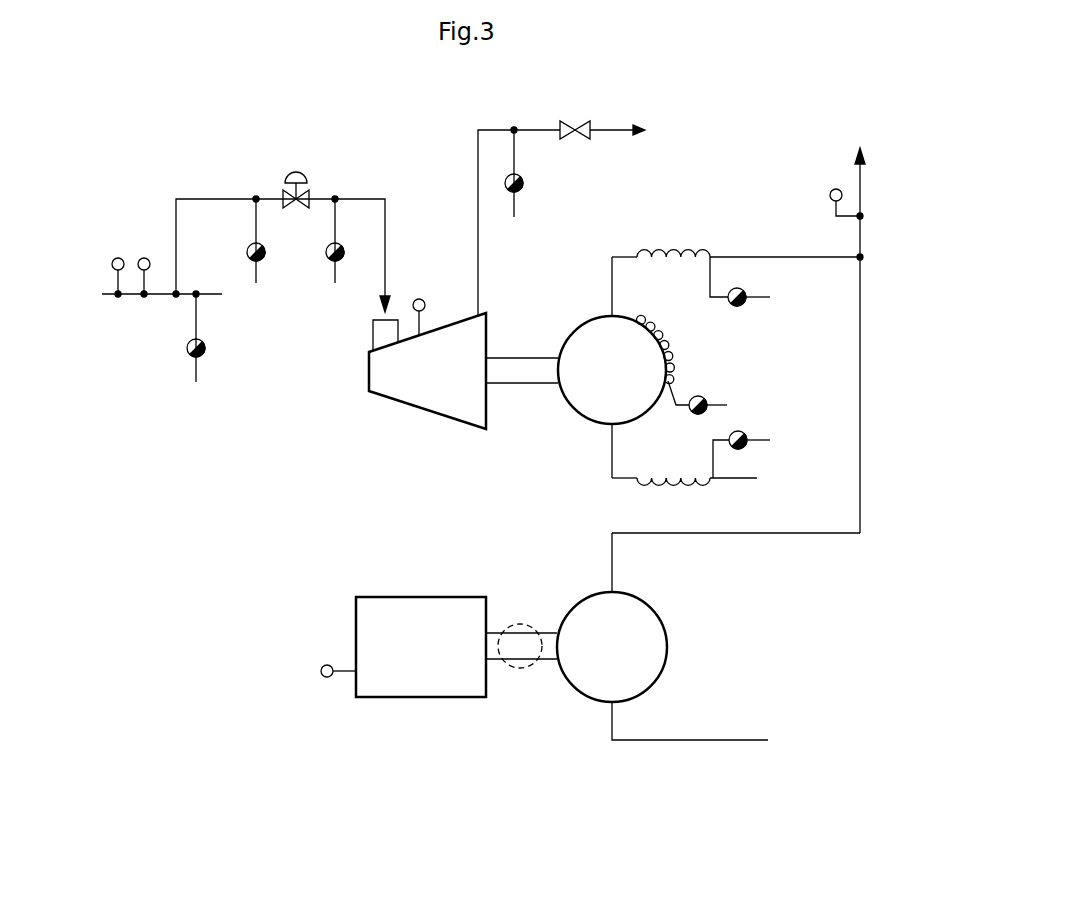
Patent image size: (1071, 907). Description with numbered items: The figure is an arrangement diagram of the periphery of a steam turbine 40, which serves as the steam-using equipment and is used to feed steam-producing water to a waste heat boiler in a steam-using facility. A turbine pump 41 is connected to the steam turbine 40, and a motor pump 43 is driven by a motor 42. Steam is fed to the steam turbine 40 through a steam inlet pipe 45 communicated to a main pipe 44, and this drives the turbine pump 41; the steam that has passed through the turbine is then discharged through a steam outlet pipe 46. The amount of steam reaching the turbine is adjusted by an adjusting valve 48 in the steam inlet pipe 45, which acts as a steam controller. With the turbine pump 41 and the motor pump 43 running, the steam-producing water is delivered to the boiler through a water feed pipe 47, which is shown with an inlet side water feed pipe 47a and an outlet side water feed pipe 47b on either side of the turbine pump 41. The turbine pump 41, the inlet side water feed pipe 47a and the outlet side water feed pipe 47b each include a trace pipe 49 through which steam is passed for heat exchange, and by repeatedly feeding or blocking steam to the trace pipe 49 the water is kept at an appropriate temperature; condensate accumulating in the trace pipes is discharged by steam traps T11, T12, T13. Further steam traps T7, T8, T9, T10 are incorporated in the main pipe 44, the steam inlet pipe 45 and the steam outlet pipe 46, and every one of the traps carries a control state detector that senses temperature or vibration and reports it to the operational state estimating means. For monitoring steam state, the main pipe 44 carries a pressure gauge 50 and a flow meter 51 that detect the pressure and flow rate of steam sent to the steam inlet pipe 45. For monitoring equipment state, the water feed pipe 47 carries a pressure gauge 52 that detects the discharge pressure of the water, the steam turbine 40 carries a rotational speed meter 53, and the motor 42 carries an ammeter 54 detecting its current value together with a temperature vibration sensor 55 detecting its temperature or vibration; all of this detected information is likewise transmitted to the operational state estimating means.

The steam turbine 40 is at (430, 400).
The turbine pump 41 is at (585, 420).
The motor 42 is at (418, 697).
The motor pump 43 is at (667, 640).
The main pipe 44 is at (165, 297).
The steam inlet pipe 45 is at (218, 199).
The steam outlet pipe 46 is at (538, 128).
The water feed pipe 47 is at (862, 298).
The inlet side water feed pipe 47a is at (624, 484).
The outlet side water feed pipe 47b is at (772, 255).
The adjusting valve 48 is at (296, 172).
The trace pipe 49 is at (688, 262).
The pressure gauge 50 is at (147, 272).
The flow meter 51 is at (118, 257).
The pressure gauge 52 is at (830, 196).
The rotational speed meter 53 is at (420, 298).
The ammeter 54 is at (327, 678).
The temperature vibration sensor 55 is at (520, 668).
The steam trap T7 is at (206, 350).
The steam trap T8 is at (250, 258).
The steam trap T9 is at (328, 255).
The steam trap T10 is at (524, 188).
The steam trap T11 is at (738, 307).
The steam trap T12 is at (706, 398).
The steam trap T13 is at (745, 450).